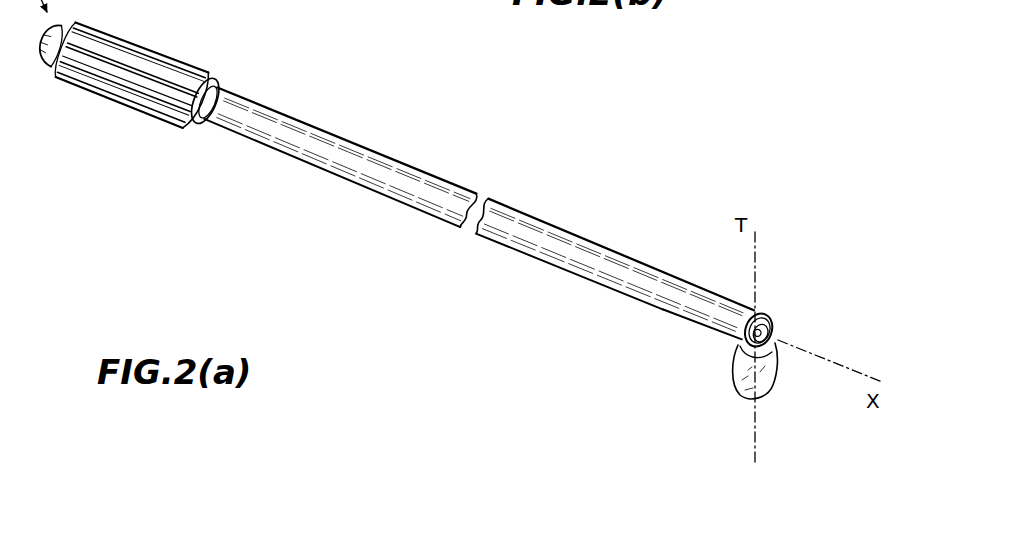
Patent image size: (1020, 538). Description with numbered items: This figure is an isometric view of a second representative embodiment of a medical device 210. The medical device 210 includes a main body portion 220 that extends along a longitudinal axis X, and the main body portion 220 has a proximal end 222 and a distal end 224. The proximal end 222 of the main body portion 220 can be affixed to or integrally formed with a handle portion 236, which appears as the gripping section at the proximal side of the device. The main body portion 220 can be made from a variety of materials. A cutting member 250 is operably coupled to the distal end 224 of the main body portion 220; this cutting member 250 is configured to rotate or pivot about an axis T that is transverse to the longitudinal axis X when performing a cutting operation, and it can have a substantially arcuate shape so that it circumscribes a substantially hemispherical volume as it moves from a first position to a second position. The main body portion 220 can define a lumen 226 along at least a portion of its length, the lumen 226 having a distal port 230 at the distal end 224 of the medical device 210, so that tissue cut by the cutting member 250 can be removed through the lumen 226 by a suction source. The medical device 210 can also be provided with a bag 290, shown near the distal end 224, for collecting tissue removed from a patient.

The medical device 210 is at (352, 270).
The main body portion 220 is at (309, 157).
The proximal end 222 is at (114, 118).
The distal end 224 is at (772, 300).
The lumen 226 is at (572, 257).
The distal port 230 is at (713, 325).
The handle portion 236 is at (127, 35).
The cutting member 250 is at (775, 324).
The bag 290 is at (739, 393).